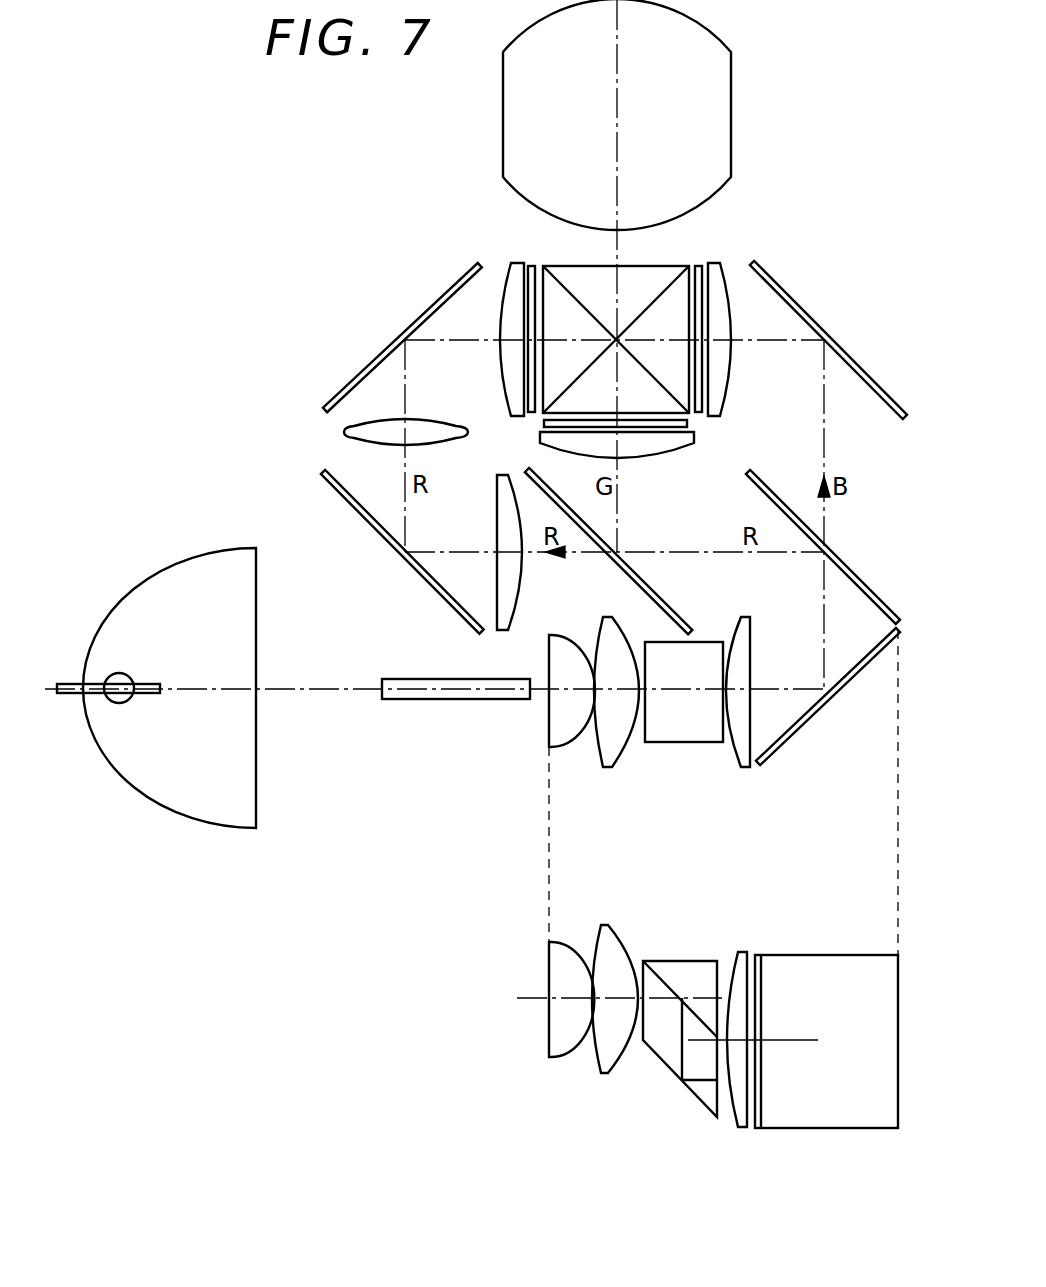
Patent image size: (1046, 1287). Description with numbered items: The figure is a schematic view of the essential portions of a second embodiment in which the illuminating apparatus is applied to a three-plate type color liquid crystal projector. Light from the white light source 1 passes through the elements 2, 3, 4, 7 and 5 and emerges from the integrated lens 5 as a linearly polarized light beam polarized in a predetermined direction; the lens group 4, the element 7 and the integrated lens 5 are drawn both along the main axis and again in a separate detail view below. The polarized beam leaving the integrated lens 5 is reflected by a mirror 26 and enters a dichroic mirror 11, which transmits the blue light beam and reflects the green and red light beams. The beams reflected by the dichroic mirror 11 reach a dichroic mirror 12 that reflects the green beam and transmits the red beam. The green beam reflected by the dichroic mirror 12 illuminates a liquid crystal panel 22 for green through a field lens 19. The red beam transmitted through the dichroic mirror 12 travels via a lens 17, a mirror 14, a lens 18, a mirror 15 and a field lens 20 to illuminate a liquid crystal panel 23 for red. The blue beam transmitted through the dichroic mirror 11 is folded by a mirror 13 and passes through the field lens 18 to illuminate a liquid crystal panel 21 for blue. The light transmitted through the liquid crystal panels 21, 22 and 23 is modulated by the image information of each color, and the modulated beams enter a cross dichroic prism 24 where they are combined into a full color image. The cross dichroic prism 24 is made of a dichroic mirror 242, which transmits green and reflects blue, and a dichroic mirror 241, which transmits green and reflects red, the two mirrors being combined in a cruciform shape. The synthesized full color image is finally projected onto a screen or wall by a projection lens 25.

The white light source 1 is at (133, 697).
The element 2 is at (155, 803).
The element 3 is at (427, 700).
The element 4 is at (643, 770).
The integrated lens 5 is at (742, 768).
The element 7 is at (693, 742).
The dichroic mirror 11 is at (858, 573).
The dichroic mirror 12 is at (675, 605).
The mirror 13 is at (866, 368).
The mirror 14 is at (413, 573).
The mirror 15 is at (442, 292).
The lens 17 is at (521, 596).
The lens 18 is at (344, 432).
The field lens 19 is at (674, 460).
The field lens 20 is at (507, 417).
The liquid crystal panel for blue 21 is at (704, 266).
The liquid crystal panel for green 22 is at (688, 426).
The liquid crystal panel for red 23 is at (533, 264).
The cross dichroic prism 24 is at (650, 268).
The projection lens 25 is at (727, 98).
The mirror 26 is at (827, 697).
The dichroic mirror 241 is at (733, 298).
The dichroic mirror 242 is at (517, 292).